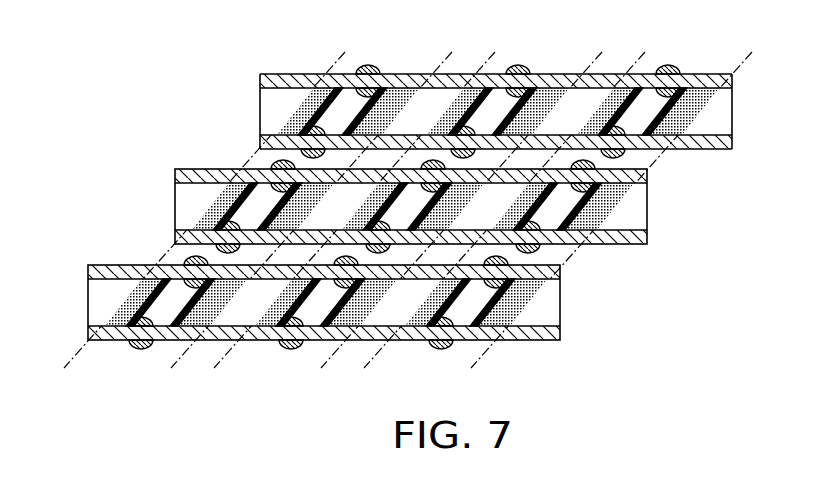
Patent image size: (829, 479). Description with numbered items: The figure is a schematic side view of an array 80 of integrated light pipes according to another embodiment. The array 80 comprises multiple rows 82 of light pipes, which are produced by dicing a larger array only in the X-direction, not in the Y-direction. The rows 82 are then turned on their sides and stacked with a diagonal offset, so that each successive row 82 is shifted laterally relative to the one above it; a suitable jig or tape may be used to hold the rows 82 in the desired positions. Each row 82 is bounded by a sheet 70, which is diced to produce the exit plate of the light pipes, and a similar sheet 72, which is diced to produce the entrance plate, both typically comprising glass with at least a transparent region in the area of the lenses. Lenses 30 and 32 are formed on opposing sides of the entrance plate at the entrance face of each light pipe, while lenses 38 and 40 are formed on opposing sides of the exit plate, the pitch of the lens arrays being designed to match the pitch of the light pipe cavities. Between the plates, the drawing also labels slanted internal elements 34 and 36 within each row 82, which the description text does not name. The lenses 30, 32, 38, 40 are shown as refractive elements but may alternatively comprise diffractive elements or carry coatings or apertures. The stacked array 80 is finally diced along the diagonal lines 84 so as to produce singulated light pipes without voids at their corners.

The array 80 is at (145, 104).
The rows 82 is at (441, 186).
The diagonal lines 84 is at (213, 362).
The sheet 70 is at (261, 80).
The sheet 72 is at (734, 139).
The lens 30 is at (300, 155).
The lens 32 is at (296, 124).
The conductive trace 34 is at (642, 100).
The conductive filler region 36 is at (698, 98).
The lens 38 is at (362, 92).
The lens 40 is at (372, 70).